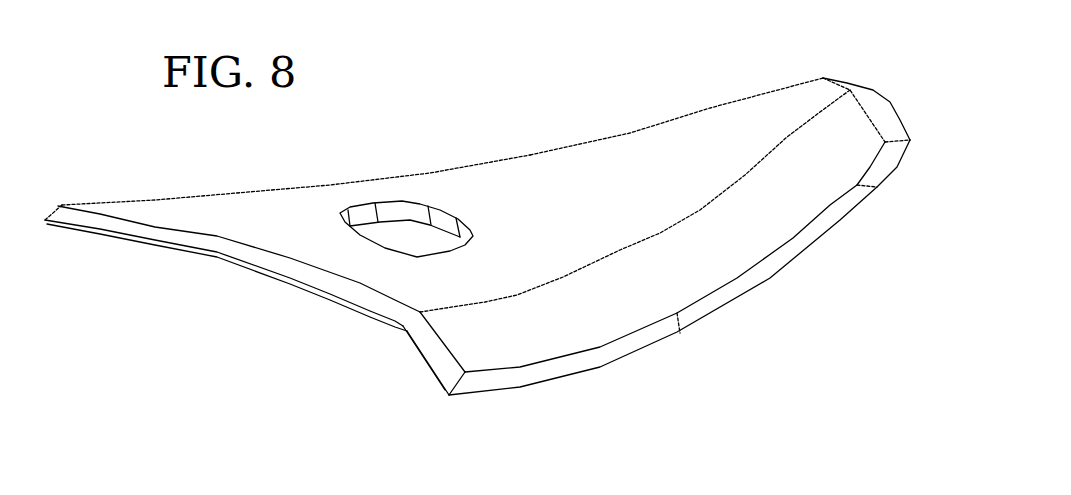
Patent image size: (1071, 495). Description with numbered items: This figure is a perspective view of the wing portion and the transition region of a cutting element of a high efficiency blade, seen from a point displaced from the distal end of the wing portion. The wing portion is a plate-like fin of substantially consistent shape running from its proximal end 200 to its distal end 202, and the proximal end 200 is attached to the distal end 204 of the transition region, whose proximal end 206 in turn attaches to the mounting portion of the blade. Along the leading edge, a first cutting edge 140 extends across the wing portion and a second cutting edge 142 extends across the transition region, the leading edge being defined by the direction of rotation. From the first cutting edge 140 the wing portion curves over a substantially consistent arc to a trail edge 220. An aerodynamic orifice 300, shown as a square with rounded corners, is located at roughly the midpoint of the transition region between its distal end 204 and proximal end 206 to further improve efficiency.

The first cutting edge 140 is at (389, 388).
The second cutting edge 142 is at (226, 286).
The proximal end of the wing portion 200 is at (589, 232).
The distal end of the wing portion 202 is at (679, 267).
The distal end of the transition region 204 is at (675, 219).
The proximal end of the transition region 206 is at (287, 221).
The trail edge 220 is at (866, 90).
The aerodynamic orifice 300 is at (406, 155).